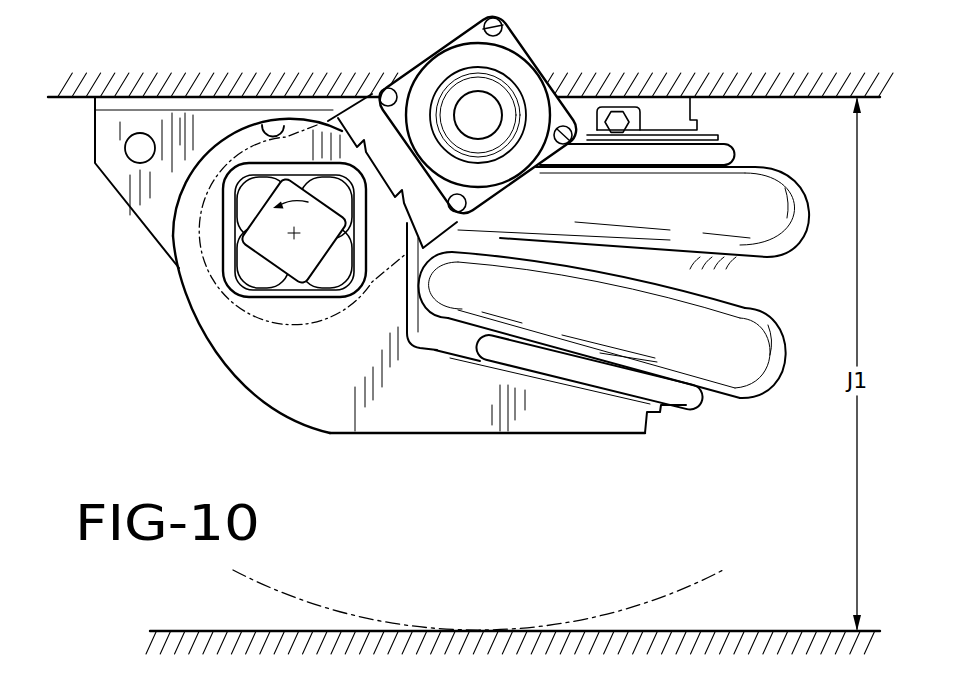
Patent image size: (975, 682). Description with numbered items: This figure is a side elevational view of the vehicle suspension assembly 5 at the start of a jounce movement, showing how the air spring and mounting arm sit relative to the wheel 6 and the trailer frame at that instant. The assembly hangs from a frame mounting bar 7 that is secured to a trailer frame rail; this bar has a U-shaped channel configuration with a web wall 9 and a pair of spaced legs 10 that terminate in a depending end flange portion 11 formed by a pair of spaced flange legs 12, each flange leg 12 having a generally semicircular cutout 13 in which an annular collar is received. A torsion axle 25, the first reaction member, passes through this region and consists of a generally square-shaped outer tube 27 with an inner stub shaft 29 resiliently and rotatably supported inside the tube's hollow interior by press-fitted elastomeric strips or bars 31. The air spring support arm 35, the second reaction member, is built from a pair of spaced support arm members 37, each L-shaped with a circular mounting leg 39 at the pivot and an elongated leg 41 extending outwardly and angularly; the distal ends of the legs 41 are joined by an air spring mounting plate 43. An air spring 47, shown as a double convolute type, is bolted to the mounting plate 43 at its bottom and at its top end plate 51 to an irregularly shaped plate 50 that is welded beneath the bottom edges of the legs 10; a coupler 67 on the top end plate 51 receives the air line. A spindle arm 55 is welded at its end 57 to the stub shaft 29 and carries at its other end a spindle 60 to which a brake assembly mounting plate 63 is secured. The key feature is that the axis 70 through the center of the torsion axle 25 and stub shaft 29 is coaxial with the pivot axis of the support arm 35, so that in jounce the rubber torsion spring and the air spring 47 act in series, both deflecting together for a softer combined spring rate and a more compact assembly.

The suspension assembly 5 is at (236, 414).
The wheel 6 is at (677, 593).
The frame mounting bar 7 is at (232, 88).
The web wall 9 is at (167, 97).
The legs 10 is at (668, 121).
The end flange portion 11 is at (118, 204).
The flange legs 12 is at (180, 224).
The semicircular cutout 13 is at (286, 132).
The torsion axle 25 is at (280, 258).
The outer tube 27 is at (285, 310).
The stub shaft 29 is at (265, 298).
The elastomeric strips or bars 31 is at (252, 274).
The air spring support arm 35 is at (388, 446).
The support arm members 37 is at (319, 408).
The circular mounting leg 39 is at (176, 238).
The elongated leg 41 is at (545, 418).
The air spring mounting plate 43 is at (666, 420).
The air spring 47 is at (752, 317).
The irregularly shaped plate 50 is at (717, 134).
The top end plate 51 is at (733, 157).
The spindle arm 55 is at (414, 50).
The spindle arm end 57 is at (205, 290).
The spindle 60 is at (483, 125).
The brake assembly mounting plate 63 is at (513, 33).
The coupler 67 is at (616, 117).
The axis 70 is at (297, 236).